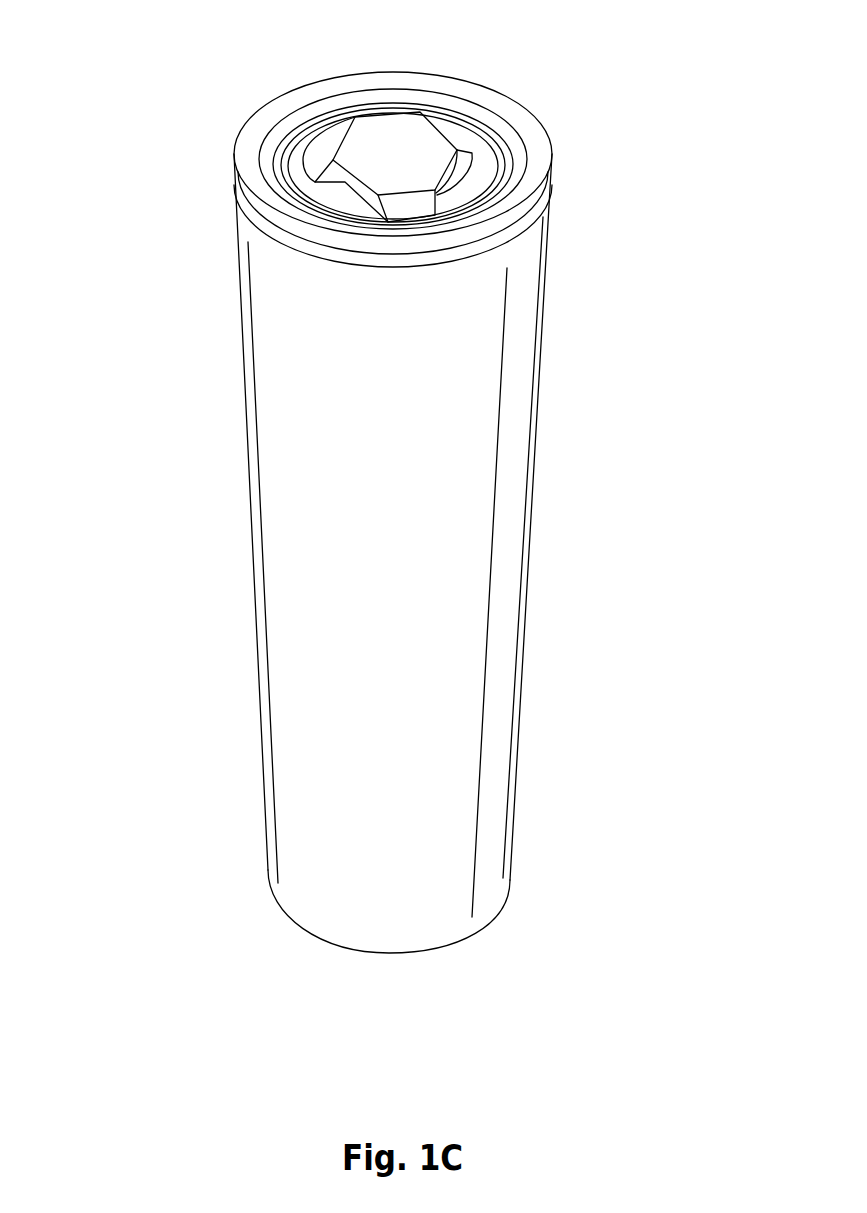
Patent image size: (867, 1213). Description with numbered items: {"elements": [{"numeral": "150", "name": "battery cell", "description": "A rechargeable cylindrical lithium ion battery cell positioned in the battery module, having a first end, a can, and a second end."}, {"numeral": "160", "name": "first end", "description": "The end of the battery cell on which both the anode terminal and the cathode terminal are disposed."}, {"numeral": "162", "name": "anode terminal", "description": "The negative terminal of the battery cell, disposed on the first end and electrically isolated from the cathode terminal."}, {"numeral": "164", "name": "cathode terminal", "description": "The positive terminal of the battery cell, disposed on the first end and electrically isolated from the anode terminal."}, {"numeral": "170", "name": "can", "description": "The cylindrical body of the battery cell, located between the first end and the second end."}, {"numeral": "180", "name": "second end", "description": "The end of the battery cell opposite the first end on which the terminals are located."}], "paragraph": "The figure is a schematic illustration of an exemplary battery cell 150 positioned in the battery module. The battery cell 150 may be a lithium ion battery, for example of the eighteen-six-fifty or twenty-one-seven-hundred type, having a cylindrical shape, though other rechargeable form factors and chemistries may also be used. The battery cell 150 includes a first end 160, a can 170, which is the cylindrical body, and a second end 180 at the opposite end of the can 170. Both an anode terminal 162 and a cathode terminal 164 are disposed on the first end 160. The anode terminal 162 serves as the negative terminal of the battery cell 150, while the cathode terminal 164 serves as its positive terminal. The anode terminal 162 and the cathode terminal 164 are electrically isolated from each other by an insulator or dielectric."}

The battery cell 150 is at (221, 84).
The cell housing rim 160 is at (555, 198).
The top cap 162 is at (522, 127).
The terminal 164 is at (424, 143).
The cylindrical housing body 170 is at (237, 263).
The bottom of housing 180 is at (468, 948).